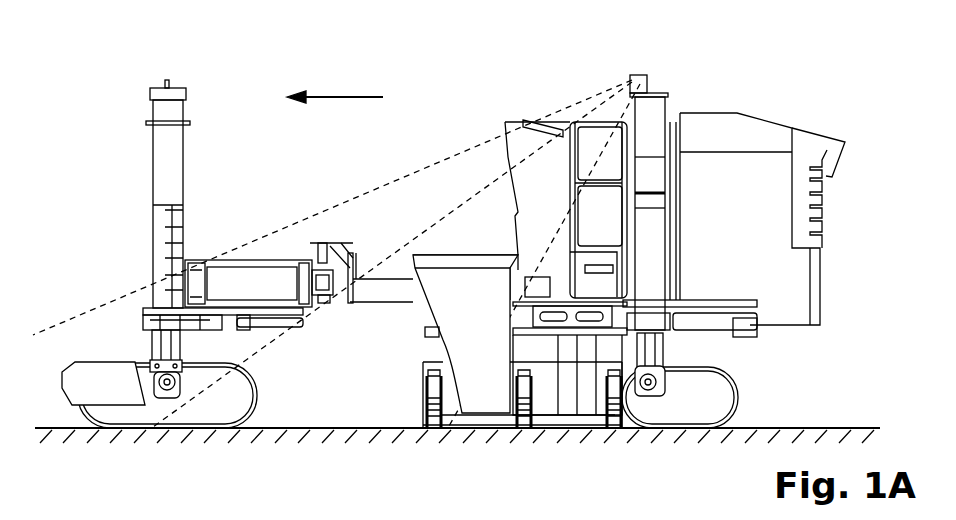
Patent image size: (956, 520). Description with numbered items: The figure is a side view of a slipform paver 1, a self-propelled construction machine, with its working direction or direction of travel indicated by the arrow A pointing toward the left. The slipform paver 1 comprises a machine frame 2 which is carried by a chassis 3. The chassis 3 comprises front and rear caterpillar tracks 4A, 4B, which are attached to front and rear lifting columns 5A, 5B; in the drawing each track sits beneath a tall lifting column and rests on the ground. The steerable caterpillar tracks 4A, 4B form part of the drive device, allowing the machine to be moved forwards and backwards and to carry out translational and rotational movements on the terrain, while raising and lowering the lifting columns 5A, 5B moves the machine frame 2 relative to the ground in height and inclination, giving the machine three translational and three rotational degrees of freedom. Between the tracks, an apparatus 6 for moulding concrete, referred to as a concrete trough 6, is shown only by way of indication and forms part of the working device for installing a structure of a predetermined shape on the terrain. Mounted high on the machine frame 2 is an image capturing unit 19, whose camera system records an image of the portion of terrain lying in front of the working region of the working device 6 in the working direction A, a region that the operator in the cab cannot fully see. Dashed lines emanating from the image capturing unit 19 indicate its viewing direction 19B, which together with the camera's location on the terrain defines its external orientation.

The slipform paver 1 is at (472, 66).
The machine frame 2 is at (265, 242).
The chassis 3 is at (762, 367).
The front caterpillar tracks 4A is at (257, 400).
The rear caterpillar tracks 4B is at (738, 400).
The front lifting columns 5A is at (184, 165).
The rear lifting columns 5B is at (668, 106).
The concrete trough 6 is at (463, 282).
The image capturing unit 19 is at (640, 74).
The viewing direction 19B is at (415, 220).
The working direction A is at (347, 95).